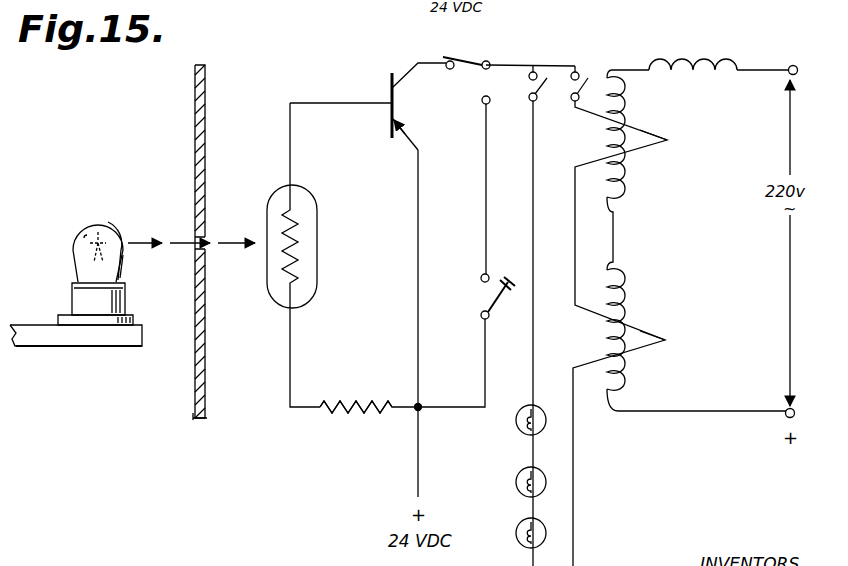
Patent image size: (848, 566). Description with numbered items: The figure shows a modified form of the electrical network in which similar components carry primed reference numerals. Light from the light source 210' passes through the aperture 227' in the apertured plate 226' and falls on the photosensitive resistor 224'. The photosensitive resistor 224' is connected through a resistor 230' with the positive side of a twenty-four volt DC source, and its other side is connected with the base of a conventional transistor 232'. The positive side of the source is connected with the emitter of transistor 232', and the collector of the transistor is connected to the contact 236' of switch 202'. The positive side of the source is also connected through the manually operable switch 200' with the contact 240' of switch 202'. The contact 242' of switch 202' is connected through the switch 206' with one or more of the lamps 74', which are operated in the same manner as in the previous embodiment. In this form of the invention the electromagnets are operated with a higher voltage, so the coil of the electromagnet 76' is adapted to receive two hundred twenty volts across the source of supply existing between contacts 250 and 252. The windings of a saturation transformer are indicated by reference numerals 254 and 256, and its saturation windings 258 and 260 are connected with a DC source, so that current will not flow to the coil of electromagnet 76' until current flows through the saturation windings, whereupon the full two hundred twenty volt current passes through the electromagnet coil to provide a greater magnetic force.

The light source 210' is at (76, 262).
The apertured plate 226' is at (227, 241).
The aperture 227' is at (224, 219).
The photosensitive resistor 224' is at (323, 246).
The transistor 232' is at (379, 97).
The contact of switch 202' 236' is at (438, 52).
The contact of switch 202' 242' is at (512, 51).
The switch 202' is at (456, 108).
The contact of switch 202' 240' is at (518, 106).
The switch 206' is at (603, 319).
The manually operable switch 200' is at (472, 288).
The resistor 230' is at (356, 427).
The lamps 74' is at (506, 476).
The electromagnet coil 76' is at (703, 45).
The transformer winding 254 is at (623, 177).
The transformer winding 256 is at (623, 283).
The saturation winding 258 is at (665, 137).
The saturation winding 260 is at (653, 345).
The contact 252 is at (788, 74).
The contact 250 is at (786, 417).